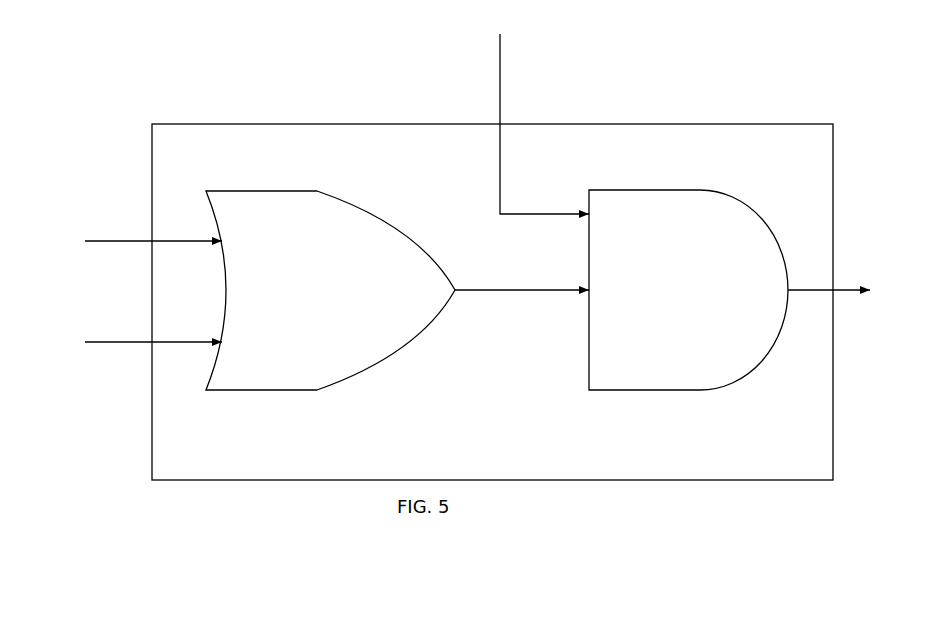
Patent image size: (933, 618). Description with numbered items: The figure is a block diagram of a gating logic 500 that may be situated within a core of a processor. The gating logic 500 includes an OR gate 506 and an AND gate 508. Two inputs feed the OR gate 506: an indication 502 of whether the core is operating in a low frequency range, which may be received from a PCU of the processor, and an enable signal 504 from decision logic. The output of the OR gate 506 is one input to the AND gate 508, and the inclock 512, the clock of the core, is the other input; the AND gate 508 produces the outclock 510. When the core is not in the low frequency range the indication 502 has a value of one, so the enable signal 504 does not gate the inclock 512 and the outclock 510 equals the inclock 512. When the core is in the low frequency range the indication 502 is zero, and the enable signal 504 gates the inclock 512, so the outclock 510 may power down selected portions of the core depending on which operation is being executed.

The gating logic 500 is at (492, 302).
The indication of low frequency range 502 is at (100, 240).
The enable signal 504 is at (100, 343).
The OR gate 506 is at (313, 390).
The AND gate 508 is at (688, 392).
The outclock 510 is at (835, 293).
The inclock 512 is at (523, 212).